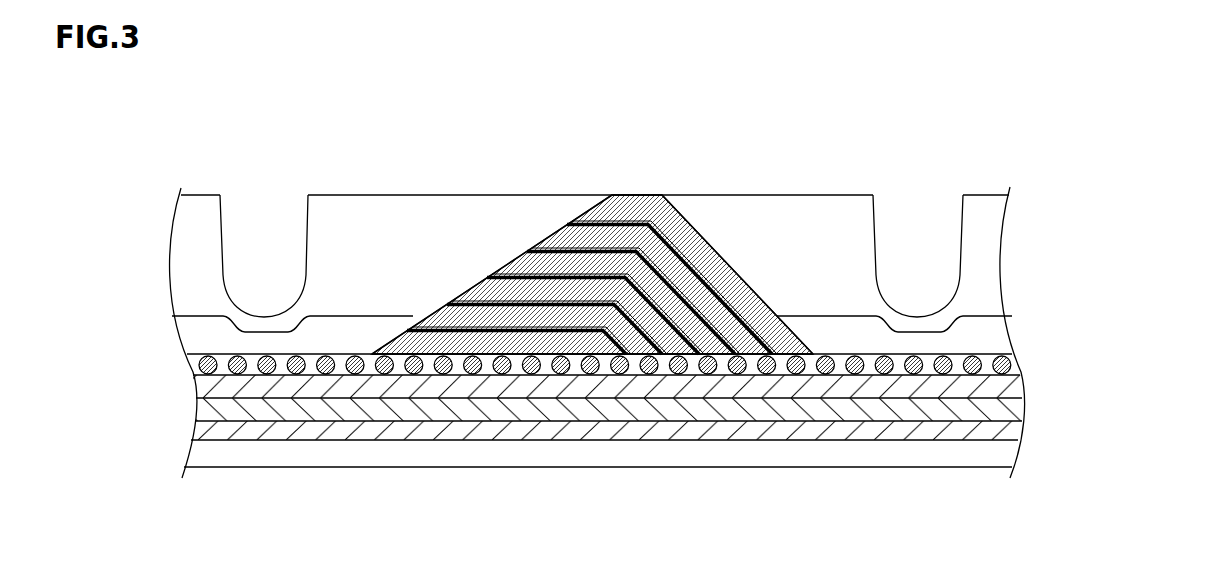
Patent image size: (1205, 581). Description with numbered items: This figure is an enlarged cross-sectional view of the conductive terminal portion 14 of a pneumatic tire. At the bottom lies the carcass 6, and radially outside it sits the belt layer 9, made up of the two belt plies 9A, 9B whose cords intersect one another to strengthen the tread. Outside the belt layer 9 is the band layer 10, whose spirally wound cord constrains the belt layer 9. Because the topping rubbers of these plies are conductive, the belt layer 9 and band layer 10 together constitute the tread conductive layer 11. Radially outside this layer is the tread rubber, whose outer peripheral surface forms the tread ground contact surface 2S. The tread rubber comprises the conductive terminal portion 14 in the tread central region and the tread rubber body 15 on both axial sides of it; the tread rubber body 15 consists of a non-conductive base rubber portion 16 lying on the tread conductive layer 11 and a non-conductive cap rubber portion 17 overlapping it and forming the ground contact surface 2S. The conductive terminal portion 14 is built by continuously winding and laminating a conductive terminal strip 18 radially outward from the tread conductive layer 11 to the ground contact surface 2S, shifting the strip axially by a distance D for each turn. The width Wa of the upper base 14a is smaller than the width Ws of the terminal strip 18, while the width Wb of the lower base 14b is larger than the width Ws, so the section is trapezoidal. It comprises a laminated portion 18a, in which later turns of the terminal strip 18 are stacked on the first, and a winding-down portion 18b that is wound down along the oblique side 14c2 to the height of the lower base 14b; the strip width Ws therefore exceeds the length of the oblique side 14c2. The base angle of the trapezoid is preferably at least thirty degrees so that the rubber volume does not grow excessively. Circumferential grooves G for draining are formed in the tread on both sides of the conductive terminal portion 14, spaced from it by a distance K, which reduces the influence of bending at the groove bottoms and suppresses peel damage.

The tread ground contact surface 2S is at (818, 192).
The carcass 6 is at (910, 425).
The belt layer 9 is at (666, 399).
The belt ply 9A is at (1013, 410).
The belt ply 9B is at (1013, 388).
The band layer 10 is at (1013, 363).
The tread conductive layer 11 is at (685, 385).
The conductive terminal portion 14 is at (592, 290).
The upper base 14a is at (640, 195).
The lower base 14b is at (547, 356).
The oblique side 14c2 is at (727, 247).
The tread rubber body 15 is at (352, 136).
The base rubber portion 16 is at (315, 340).
The cap rubber portion 17 is at (330, 222).
The terminal strip 18 is at (602, 320).
The laminated portion 18a is at (590, 213).
The winding-down portion 18b is at (747, 297).
The circumferential groove G is at (237, 222).
The distance D is at (371, 165).
The distance K is at (308, 268).
The width of upper base Wa is at (662, 129).
The width of terminal strip Ws is at (629, 354).
The width of lower base Wb is at (371, 547).